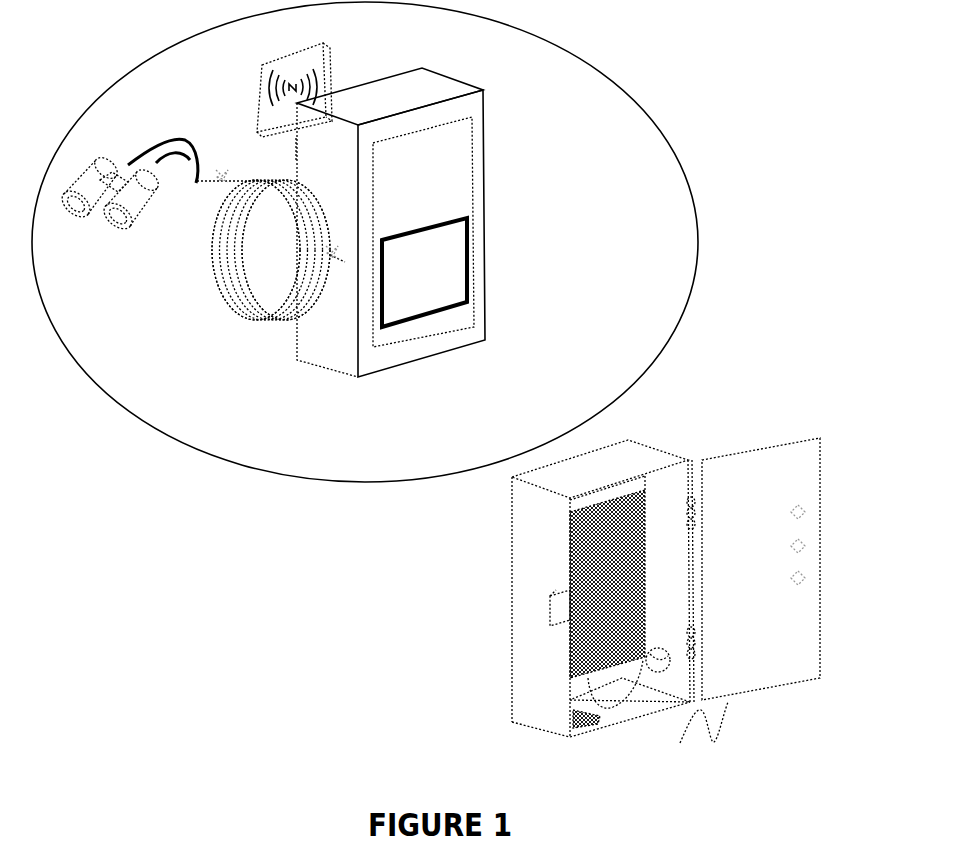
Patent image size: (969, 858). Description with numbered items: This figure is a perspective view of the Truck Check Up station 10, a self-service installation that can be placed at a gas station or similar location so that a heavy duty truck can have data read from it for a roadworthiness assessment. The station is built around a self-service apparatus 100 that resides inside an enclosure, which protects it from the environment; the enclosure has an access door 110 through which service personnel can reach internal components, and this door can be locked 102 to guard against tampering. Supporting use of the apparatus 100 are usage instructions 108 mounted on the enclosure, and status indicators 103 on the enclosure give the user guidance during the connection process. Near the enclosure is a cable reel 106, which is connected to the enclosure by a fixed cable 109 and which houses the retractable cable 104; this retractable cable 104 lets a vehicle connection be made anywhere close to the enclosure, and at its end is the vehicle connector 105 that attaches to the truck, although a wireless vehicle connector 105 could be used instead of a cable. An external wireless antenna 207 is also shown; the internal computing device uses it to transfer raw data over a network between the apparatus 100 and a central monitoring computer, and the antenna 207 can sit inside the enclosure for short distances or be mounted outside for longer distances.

The Truck Check Up station 10 is at (657, 118).
The external wireless antenna 207 is at (351, 96).
The vehicle connector 105 is at (123, 137).
The retractable cable 104 is at (257, 323).
The cable reel 106 is at (257, 323).
The usage instructions 108 is at (453, 150).
The status indicators 103 is at (447, 283).
The self-service apparatus 100 is at (593, 568).
The lock 102 is at (553, 604).
The fixed cable 109 is at (637, 714).
The access door 110 is at (756, 727).